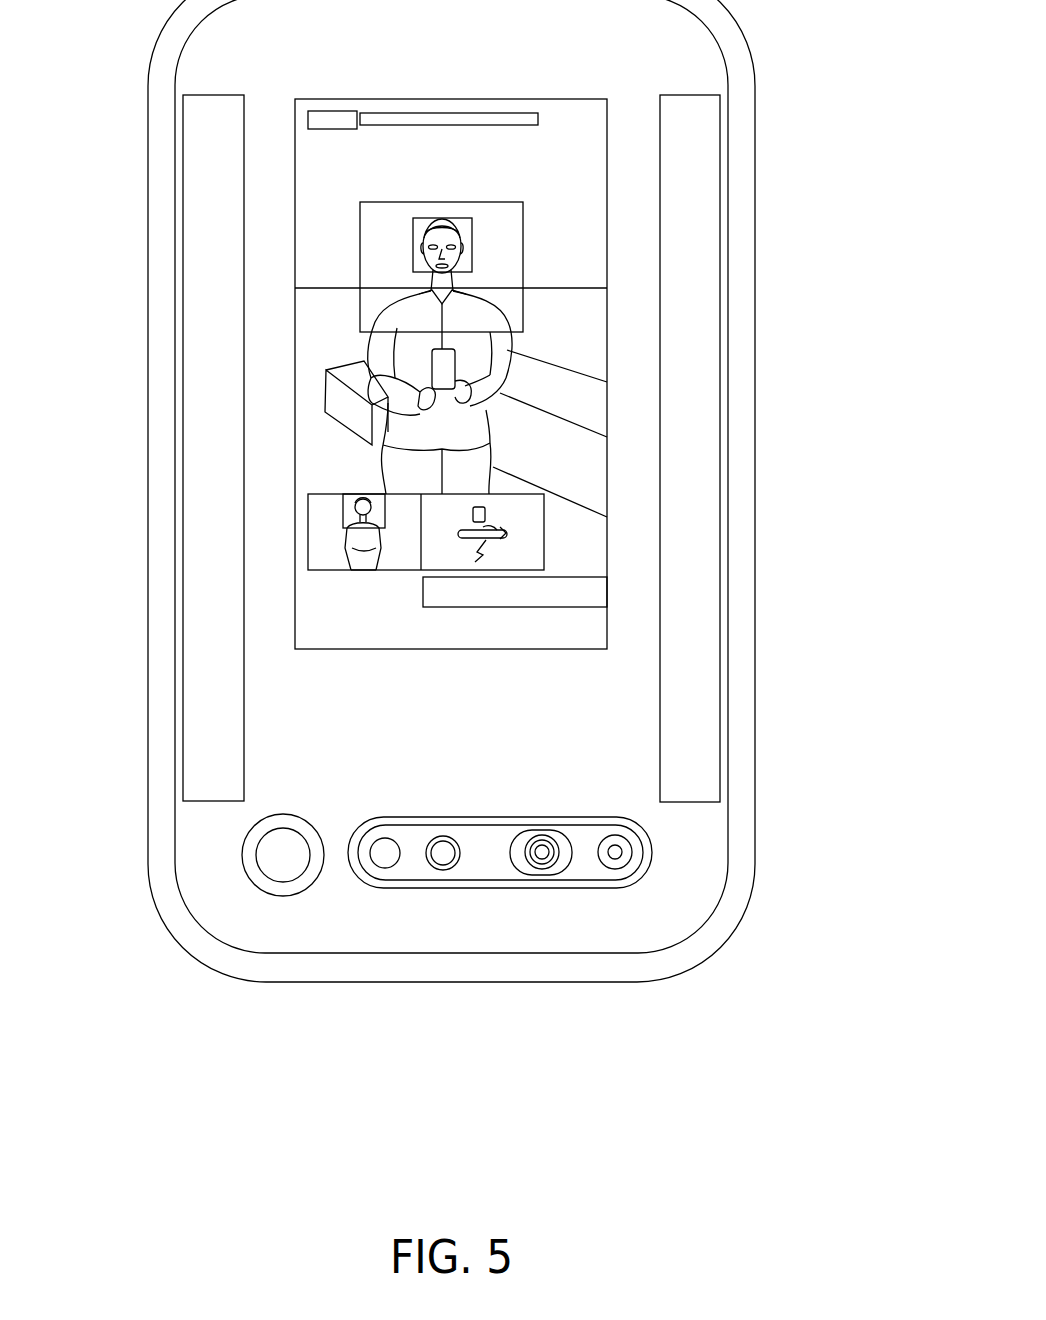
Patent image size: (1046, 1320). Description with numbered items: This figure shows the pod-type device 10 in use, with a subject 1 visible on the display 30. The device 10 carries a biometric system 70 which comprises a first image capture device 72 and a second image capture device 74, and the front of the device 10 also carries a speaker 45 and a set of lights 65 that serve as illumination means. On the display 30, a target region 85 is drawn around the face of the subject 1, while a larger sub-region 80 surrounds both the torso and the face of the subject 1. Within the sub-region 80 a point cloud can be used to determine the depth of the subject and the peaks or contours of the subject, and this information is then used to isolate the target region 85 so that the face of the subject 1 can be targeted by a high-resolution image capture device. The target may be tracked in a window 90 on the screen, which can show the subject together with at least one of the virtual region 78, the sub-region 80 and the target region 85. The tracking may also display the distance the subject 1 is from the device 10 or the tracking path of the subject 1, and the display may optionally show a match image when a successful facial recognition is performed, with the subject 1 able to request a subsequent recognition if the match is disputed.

The subject 1 is at (492, 367).
The device 10 is at (140, 157).
The display 30 is at (558, 195).
The speaker 45 is at (673, 913).
The lights 65 is at (199, 533).
The biometric system 70 is at (584, 882).
The first image capture device 72 is at (575, 848).
The second image capture device 74 is at (283, 847).
The virtual region 78 is at (555, 235).
The sub-region 80 is at (528, 277).
The target region 85 is at (472, 218).
The window 90 is at (308, 545).